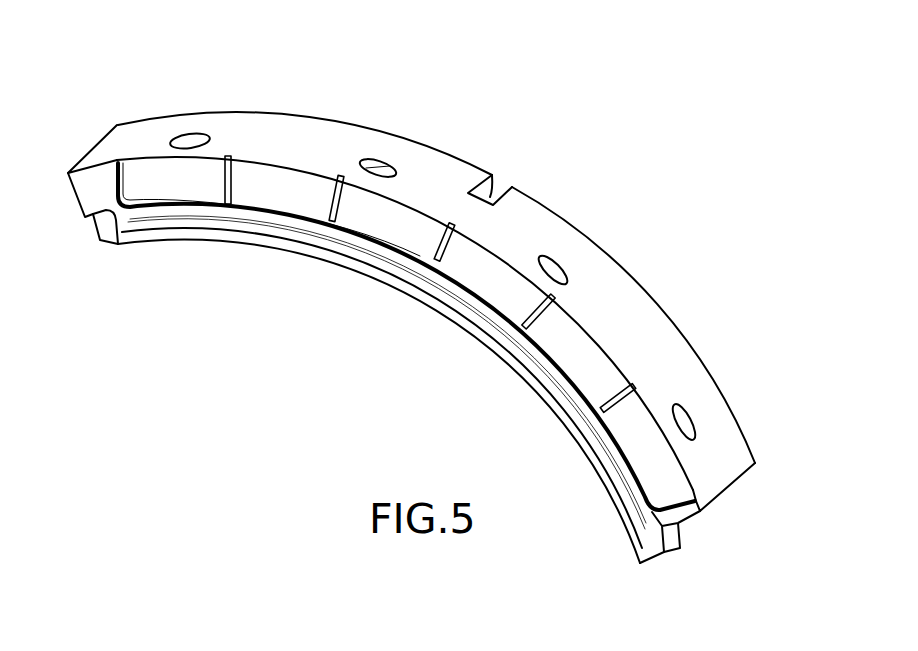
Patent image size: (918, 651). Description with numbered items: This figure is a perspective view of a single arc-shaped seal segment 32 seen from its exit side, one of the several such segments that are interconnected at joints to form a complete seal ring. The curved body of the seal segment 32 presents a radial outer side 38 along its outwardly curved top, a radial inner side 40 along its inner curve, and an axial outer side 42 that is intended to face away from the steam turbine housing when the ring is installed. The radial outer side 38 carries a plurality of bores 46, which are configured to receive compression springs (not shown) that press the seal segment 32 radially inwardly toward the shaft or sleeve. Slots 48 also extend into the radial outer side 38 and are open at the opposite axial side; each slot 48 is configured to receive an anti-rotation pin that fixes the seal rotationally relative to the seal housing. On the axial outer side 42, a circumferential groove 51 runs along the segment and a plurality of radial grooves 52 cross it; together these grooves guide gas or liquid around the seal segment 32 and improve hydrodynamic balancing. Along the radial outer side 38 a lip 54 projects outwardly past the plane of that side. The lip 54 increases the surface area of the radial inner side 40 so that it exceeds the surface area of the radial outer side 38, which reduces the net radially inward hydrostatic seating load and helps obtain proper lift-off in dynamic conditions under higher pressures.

The seal segment 32 is at (411, 329).
The radial outer side 38 is at (537, 223).
The radial inner side 40 is at (500, 355).
The axial outer side 42 is at (585, 368).
The bores 46 is at (372, 164).
The slots 48 is at (494, 192).
The circumferential groove 51 is at (183, 203).
The radial grooves 52 is at (231, 183).
The lip 54 is at (373, 275).